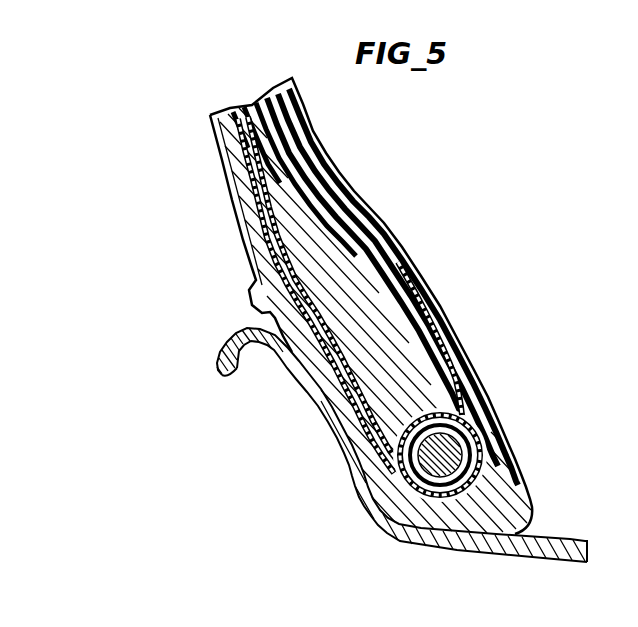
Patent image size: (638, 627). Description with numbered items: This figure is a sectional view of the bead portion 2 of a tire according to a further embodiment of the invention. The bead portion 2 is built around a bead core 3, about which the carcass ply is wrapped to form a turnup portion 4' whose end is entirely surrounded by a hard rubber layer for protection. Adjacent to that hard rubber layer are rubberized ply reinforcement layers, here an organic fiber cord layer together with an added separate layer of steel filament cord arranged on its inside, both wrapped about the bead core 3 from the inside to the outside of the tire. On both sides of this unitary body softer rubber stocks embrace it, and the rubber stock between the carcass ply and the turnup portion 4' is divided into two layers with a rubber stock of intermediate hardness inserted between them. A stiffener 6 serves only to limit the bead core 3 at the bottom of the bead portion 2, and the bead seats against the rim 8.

The bead portion 2 is at (250, 292).
The bead core 3 is at (487, 437).
The turnup portion 4' is at (252, 372).
The stiffener 6 is at (373, 477).
The rim 8 is at (313, 380).